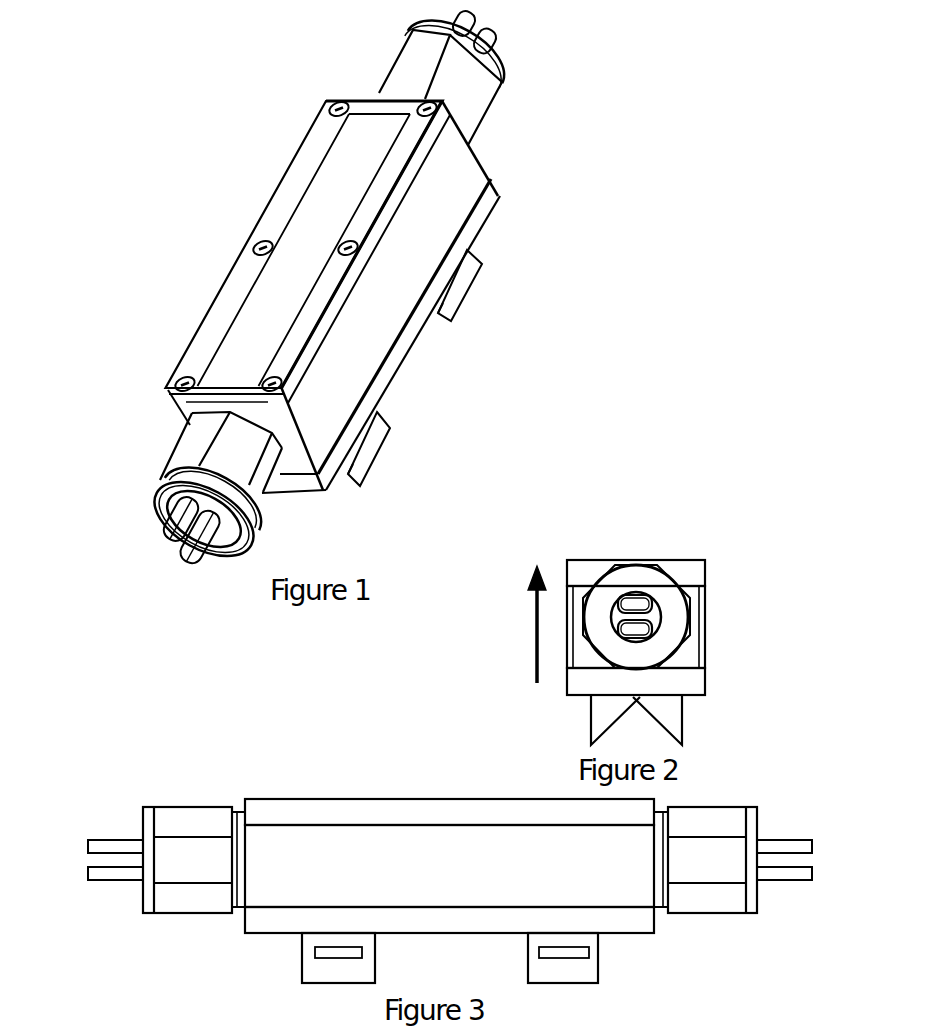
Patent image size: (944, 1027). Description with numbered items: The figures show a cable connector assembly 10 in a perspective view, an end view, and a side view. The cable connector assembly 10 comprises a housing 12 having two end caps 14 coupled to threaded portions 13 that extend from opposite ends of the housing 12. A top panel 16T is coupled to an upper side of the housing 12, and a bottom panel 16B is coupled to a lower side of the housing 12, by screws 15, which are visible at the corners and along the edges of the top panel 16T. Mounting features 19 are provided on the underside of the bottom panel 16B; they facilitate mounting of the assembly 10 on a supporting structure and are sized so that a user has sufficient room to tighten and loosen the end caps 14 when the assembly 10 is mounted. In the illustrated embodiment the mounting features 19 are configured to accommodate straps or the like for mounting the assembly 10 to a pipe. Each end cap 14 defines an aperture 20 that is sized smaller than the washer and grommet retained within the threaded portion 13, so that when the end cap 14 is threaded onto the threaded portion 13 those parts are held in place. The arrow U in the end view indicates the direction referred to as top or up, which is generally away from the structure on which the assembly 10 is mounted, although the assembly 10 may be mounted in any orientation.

In FIG. 1, the cable connector assembly 10 is at (542, 96).
In FIG. 1, the housing 12 is at (365, 317).
In FIG. 2, the housing 12 is at (697, 630).
In FIG. 3, the housing 12 is at (433, 852).
In FIG. 1, the threaded portions 13 is at (250, 403).
In FIG. 3, the threaded portions 13 is at (237, 907).
In FIG. 1, the end caps 14 is at (473, 107).
In FIG. 2, the end caps 14 is at (636, 617).
In FIG. 3, the end caps 14 is at (163, 813).
In FIG. 1, the screws 15 is at (330, 107).
In FIG. 1, the top panel 16T is at (313, 207).
In FIG. 2, the top panel 16T is at (693, 577).
In FIG. 3, the top panel 16T is at (340, 815).
In FIG. 1, the bottom panel 16B is at (482, 205).
In FIG. 2, the bottom panel 16B is at (698, 682).
In FIG. 3, the bottom panel 16B is at (625, 927).
In FIG. 1, the mounting features 19 is at (470, 285).
In FIG. 2, the mounting features 19 is at (600, 717).
In FIG. 3, the mounting features 19 is at (303, 960).
In FIG. 1, the aperture 20 is at (170, 503).
In FIG. 2, the aperture 20 is at (669, 608).
In FIG. 2, the arrow U is at (533, 631).